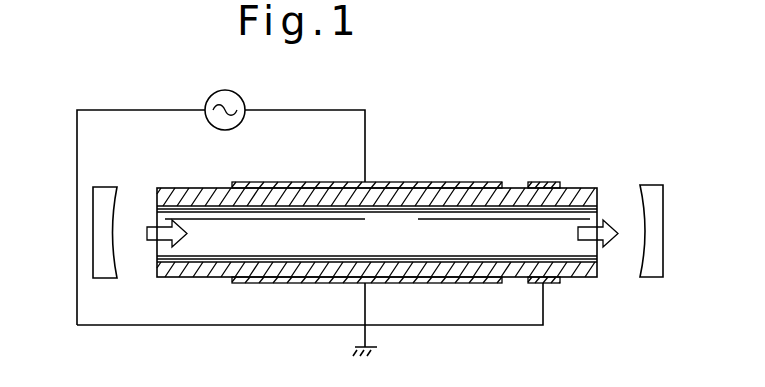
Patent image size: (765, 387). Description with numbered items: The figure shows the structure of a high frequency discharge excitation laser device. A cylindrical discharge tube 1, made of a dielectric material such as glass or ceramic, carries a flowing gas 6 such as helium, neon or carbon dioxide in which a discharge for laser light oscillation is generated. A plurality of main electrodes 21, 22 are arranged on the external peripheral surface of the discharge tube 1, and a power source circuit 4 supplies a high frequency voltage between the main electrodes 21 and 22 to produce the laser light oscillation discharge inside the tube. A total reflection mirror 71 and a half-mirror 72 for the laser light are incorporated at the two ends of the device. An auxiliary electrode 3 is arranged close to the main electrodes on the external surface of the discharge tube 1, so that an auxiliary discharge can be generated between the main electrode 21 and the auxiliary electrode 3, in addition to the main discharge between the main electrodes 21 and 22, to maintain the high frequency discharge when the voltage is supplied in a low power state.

The discharge tube 1 is at (598, 188).
The auxiliary electrode 3 is at (550, 182).
The power source circuit 4 is at (240, 95).
The gas 6 is at (147, 228).
The main electrode 21 is at (423, 182).
The main electrode 22 is at (421, 283).
The total reflection mirror 71 is at (106, 185).
The half-mirror 72 is at (654, 185).